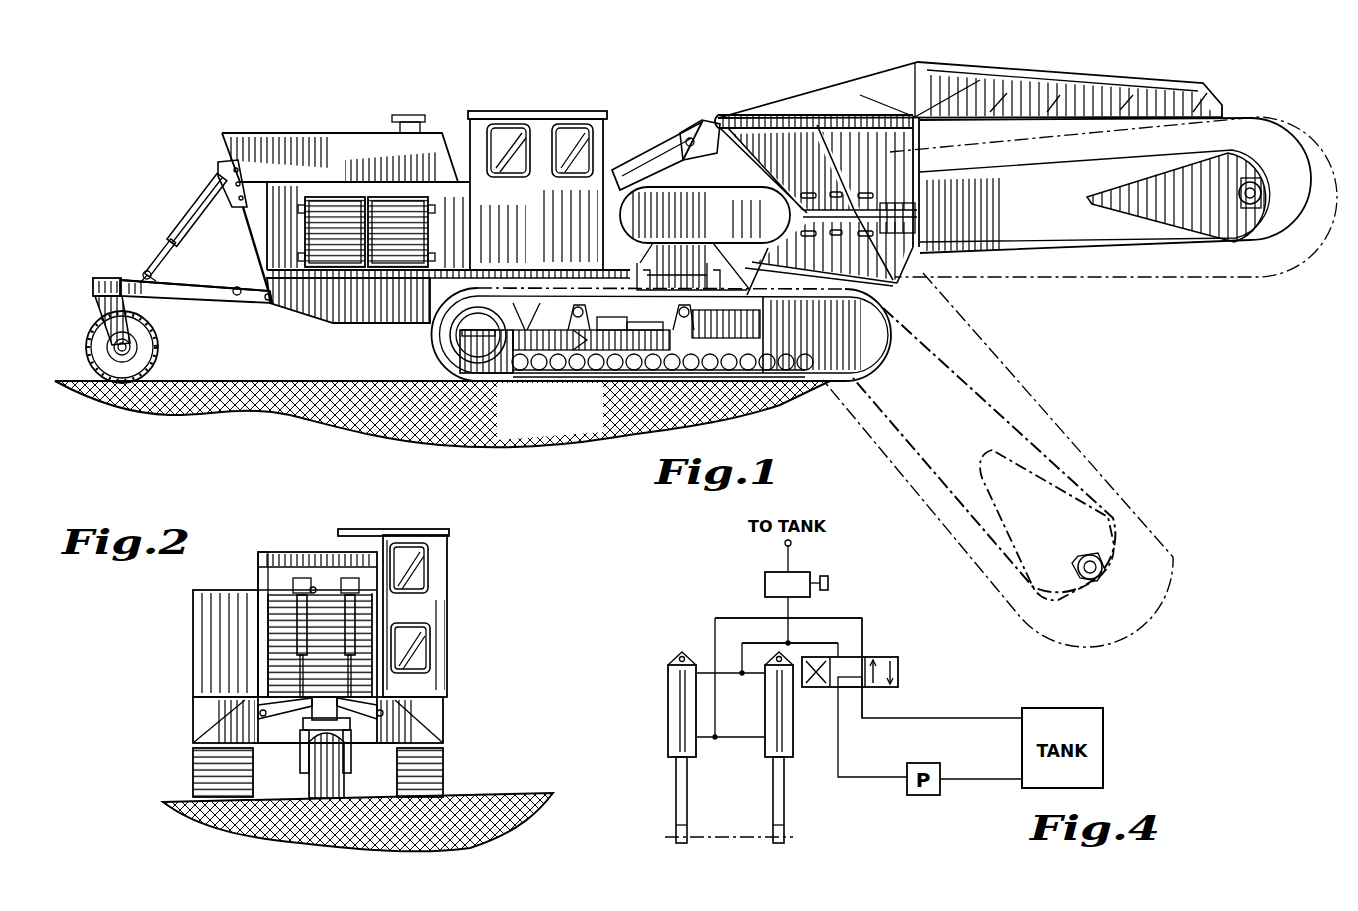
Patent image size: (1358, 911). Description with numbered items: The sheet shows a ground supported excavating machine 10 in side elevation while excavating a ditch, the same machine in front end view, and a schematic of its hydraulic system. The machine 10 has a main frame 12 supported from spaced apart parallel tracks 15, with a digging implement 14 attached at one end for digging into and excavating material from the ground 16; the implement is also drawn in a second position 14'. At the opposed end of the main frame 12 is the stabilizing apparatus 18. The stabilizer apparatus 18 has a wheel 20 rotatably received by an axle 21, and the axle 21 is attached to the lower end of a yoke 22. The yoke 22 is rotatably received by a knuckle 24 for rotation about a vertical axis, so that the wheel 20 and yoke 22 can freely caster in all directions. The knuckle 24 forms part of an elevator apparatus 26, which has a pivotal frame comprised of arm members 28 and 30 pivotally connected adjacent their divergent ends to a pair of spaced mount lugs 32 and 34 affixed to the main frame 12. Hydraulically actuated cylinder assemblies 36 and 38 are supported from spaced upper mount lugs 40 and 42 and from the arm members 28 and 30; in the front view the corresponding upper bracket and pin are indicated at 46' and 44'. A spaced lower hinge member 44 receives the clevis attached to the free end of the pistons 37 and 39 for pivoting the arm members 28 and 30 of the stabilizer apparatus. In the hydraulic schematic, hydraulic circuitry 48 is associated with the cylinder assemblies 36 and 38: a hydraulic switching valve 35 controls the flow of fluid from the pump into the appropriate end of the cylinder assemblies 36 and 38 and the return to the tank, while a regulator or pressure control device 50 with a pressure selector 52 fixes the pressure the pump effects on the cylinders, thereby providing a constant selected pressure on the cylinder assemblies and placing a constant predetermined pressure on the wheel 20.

In FIG. 1, the excavating machine 10 is at (603, 45).
In FIG. 2, the excavating machine 10 is at (462, 627).
In FIG. 1, the main frame 12 is at (330, 322).
In FIG. 2, the main frame 12 is at (424, 721).
In FIG. 1, the digging implement 14 is at (974, 178).
In FIG. 1, the boom arm (lowered position) 14' is at (998, 460).
In FIG. 1, the tracks 15 is at (432, 346).
In FIG. 2, the tracks 15 is at (447, 765).
In FIG. 1, the ground surface 16 is at (287, 382).
In FIG. 1, the stabilizing apparatus 18 is at (138, 306).
In FIG. 2, the stabilizing apparatus 18 is at (326, 758).
In FIG. 1, the wheel 20 is at (160, 363).
In FIG. 2, the wheel 20 is at (309, 784).
In FIG. 1, the axle 21 is at (118, 349).
In FIG. 1, the yoke 22 is at (120, 300).
In FIG. 2, the yoke 22 is at (303, 748).
In FIG. 1, the knuckle 24 is at (108, 278).
In FIG. 2, the knuckle 24 is at (327, 700).
In FIG. 1, the elevator apparatus 26 is at (216, 299).
In FIG. 1, the arm member 28 is at (215, 286).
In FIG. 2, the arm member 28 is at (372, 698).
In FIG. 1, the arm member 30 is at (193, 222).
In FIG. 2, the arm member 30 is at (270, 693).
In FIG. 1, the mount lug 32 is at (270, 305).
In FIG. 2, the mount lug 32 is at (382, 714).
In FIG. 1, the mount lug 34 is at (250, 305).
In FIG. 2, the mount lug 34 is at (258, 714).
In FIG. 4, the hydraulic switching valve 35 is at (903, 658).
In FIG. 1, the hydraulically actuated cylinder assembly 36 is at (186, 206).
In FIG. 2, the hydraulically actuated cylinder assembly 36 is at (358, 627).
In FIG. 4, the hydraulically actuated cylinder assembly 36 is at (767, 714).
In FIG. 4, the piston 37 is at (773, 812).
In FIG. 1, the hydraulically actuated cylinder assembly 38 is at (195, 182).
In FIG. 2, the hydraulically actuated cylinder assembly 38 is at (270, 628).
In FIG. 4, the hydraulically actuated cylinder assembly 38 is at (670, 712).
In FIG. 4, the piston 39 is at (690, 768).
In FIG. 1, the upper mount lug 40 is at (222, 165).
In FIG. 2, the upper mount lug 40 is at (344, 578).
In FIG. 2, the upper mount lug 42 is at (256, 578).
In FIG. 1, the lower hinge member 44 is at (135, 263).
In FIG. 2, the pin 44' is at (325, 576).
In FIG. 2, the cylinder bracket 46' is at (293, 550).
In FIG. 4, the hydraulic circuitry 48 is at (728, 590).
In FIG. 4, the pressure control device 50 is at (800, 570).
In FIG. 4, the pressure selector 52 is at (830, 582).